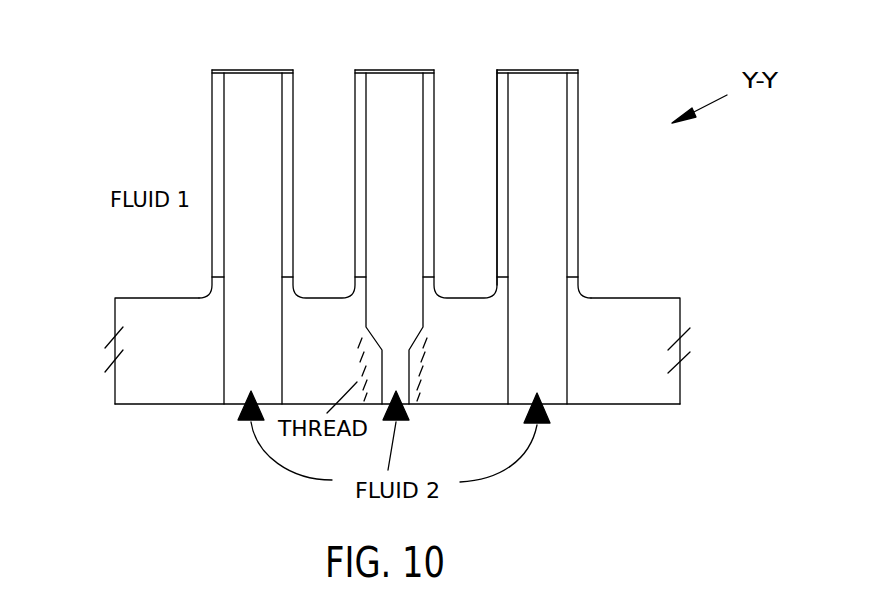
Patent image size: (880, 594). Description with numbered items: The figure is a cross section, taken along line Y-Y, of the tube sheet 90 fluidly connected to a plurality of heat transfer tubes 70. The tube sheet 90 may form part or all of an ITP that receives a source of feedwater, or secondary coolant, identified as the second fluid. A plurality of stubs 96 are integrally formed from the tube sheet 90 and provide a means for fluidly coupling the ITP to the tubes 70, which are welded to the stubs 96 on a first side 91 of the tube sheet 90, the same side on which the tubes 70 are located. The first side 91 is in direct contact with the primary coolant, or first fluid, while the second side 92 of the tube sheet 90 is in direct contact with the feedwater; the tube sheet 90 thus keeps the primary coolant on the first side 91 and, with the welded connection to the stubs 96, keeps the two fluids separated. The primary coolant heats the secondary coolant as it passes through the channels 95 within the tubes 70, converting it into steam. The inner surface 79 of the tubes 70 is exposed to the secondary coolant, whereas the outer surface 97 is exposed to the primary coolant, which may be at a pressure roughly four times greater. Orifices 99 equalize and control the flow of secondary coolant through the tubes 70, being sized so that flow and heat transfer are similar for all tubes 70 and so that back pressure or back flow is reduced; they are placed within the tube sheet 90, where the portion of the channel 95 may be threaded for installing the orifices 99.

The heat transfer tubes 70 is at (583, 121).
The inner surface 79 is at (277, 157).
The tube sheet 90 is at (663, 293).
The first side 91 is at (160, 293).
The second side 92 is at (168, 408).
The channels 95 is at (540, 213).
The stubs 96 is at (583, 282).
The outer surface 97 is at (208, 177).
The orifices 99 is at (408, 375).